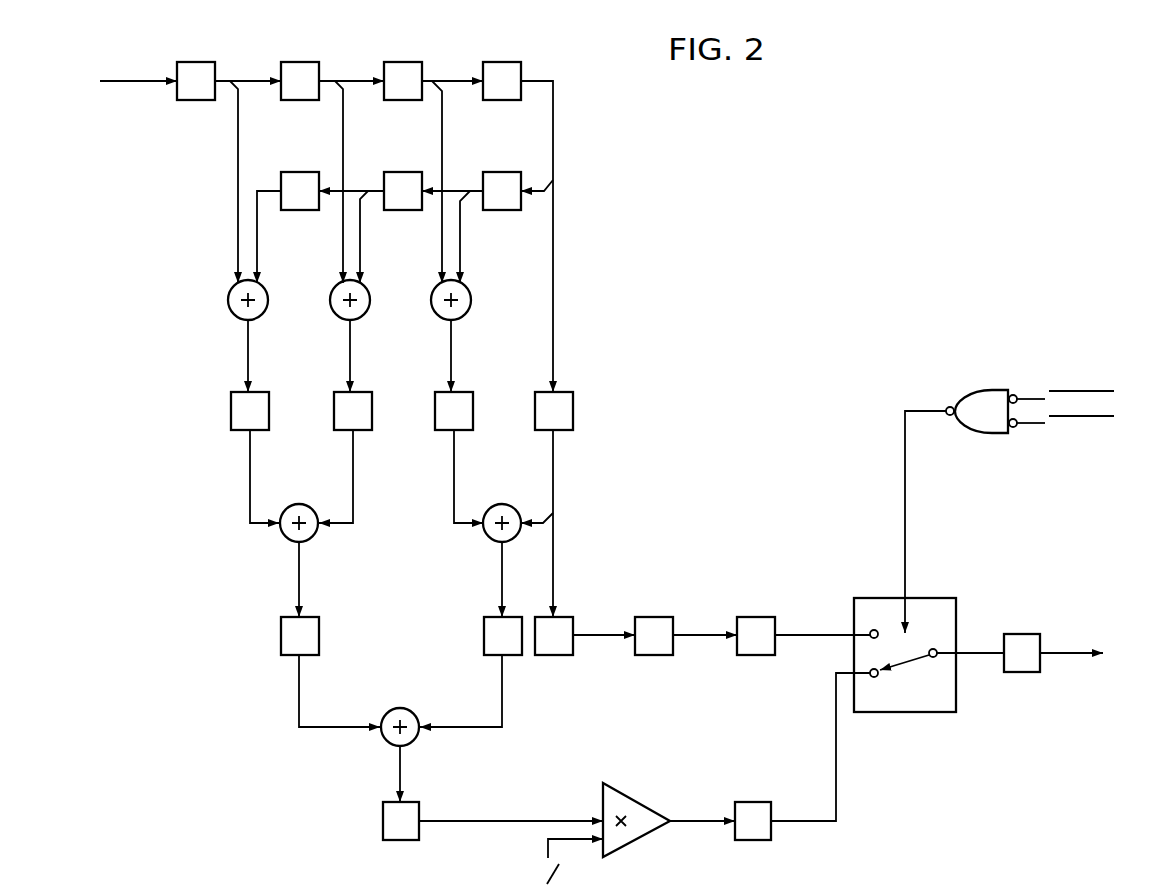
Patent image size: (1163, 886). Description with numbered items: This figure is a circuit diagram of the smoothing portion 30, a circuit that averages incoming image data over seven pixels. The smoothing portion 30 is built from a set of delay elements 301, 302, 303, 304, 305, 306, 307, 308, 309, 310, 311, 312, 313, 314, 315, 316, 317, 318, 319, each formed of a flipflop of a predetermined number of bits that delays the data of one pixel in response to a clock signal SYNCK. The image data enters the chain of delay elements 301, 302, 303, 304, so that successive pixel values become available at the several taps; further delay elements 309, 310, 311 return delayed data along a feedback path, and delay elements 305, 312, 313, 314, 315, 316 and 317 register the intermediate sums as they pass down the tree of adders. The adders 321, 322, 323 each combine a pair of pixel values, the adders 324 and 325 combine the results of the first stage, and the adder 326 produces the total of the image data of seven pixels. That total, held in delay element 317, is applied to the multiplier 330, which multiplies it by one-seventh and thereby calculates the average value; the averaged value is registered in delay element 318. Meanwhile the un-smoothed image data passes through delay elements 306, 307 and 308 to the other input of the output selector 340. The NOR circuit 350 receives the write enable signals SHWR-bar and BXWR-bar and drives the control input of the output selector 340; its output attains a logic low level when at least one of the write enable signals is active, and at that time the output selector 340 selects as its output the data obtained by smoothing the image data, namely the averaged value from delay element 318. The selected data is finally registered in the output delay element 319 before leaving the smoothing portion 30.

The smoothing portion 30 is at (593, 454).
The delay element 301 is at (195, 62).
The delay element 302 is at (298, 62).
The delay element 303 is at (392, 62).
The delay element 304 is at (505, 62).
The delay element 305 is at (560, 392).
The delay element 306 is at (565, 617).
The delay element 307 is at (650, 617).
The delay element 308 is at (755, 617).
The delay element 309 is at (487, 172).
The delay element 310 is at (388, 172).
The delay element 311 is at (288, 172).
The delay element 312 is at (262, 392).
The delay element 313 is at (355, 392).
The delay element 314 is at (455, 392).
The delay element 315 is at (312, 617).
The delay element 316 is at (492, 617).
The delay element 317 is at (420, 802).
The delay element 318 is at (740, 802).
The delay element 319 is at (1015, 634).
The adder 321 is at (262, 287).
The adder 322 is at (364, 287).
The adder 323 is at (465, 287).
The adder 324 is at (296, 504).
The adder 325 is at (503, 504).
The adder 326 is at (400, 708).
The multiplier 330 is at (628, 795).
The output selector 340 is at (930, 597).
The NOR circuit 350 is at (975, 390).